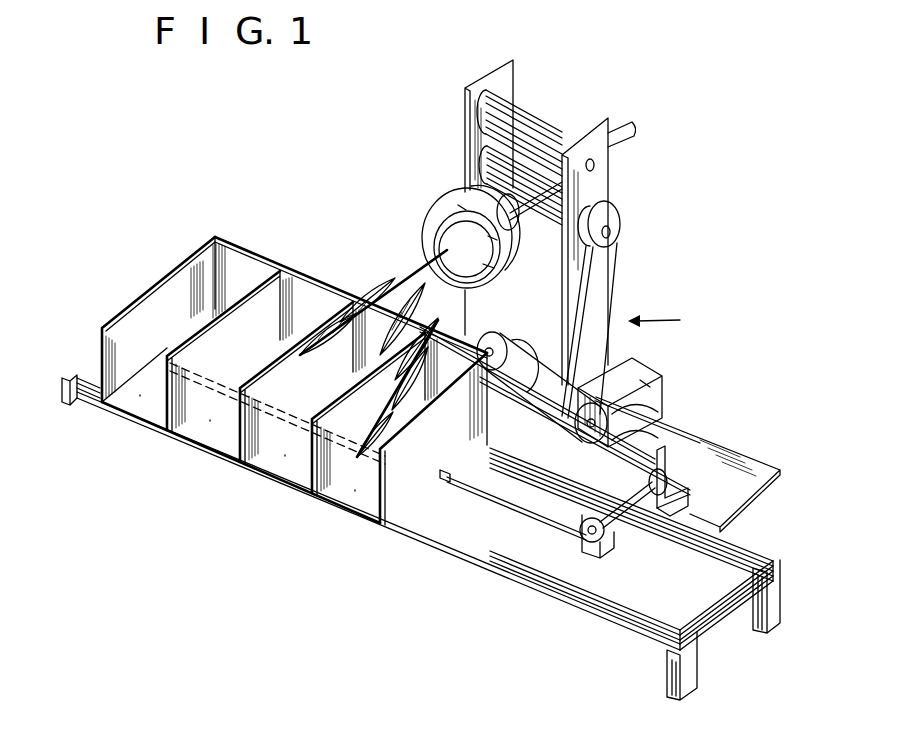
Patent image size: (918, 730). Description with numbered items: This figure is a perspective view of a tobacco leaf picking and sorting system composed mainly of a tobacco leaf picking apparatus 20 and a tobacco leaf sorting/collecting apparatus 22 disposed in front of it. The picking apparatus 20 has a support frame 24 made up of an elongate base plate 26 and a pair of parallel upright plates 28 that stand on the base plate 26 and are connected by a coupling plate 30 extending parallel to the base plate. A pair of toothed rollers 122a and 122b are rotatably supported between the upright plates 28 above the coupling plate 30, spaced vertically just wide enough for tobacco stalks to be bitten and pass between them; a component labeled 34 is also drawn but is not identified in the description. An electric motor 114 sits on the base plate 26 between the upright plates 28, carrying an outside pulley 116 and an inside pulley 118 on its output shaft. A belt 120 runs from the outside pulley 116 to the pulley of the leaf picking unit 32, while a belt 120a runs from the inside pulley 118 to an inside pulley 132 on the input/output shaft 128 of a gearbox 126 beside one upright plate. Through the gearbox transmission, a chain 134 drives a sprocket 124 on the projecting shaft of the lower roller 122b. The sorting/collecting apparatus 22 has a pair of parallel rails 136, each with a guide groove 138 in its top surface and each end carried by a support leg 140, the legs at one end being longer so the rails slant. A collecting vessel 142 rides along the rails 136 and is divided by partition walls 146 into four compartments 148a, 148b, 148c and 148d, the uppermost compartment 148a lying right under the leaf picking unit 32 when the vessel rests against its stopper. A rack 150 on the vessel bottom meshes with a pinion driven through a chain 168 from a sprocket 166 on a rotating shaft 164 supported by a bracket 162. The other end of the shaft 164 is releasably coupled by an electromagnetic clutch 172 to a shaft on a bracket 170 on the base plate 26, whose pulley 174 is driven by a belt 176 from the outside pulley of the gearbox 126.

The tobacco leaf picking apparatus 20 is at (426, 181).
The tobacco leaf sorting/collecting apparatus 22 is at (258, 518).
The support frame 24 is at (667, 318).
The base plate 26 is at (767, 467).
The upright plates 28 is at (492, 73).
The coupling plate 30 is at (555, 252).
The leaf picking unit 32 is at (428, 223).
The roller shaft 34 is at (562, 207).
The electric motor 114 is at (512, 418).
The outside pulley 116 is at (478, 400).
The inside pulley 118 is at (510, 340).
The belt 120 is at (478, 343).
The belt 120a is at (612, 358).
The toothed roller 122a is at (537, 110).
The toothed roller 122b is at (490, 157).
The sprocket 124 is at (622, 222).
The gearbox 126 is at (640, 369).
The input/output shaft 128 is at (587, 438).
The inside pulley 132 is at (650, 397).
The chain 134 is at (613, 290).
The rails 136 is at (585, 613).
The guide groove 138 is at (760, 558).
The support leg 140 is at (70, 398).
The collecting vessel 142 is at (170, 268).
The partition walls 146 is at (185, 430).
The compartment 148a is at (372, 510).
The compartment 148b is at (298, 475).
The compartment 148c is at (215, 440).
The compartment 148d is at (150, 405).
The rack 150 is at (442, 480).
The bracket 162 is at (607, 545).
The rotating shaft 164 is at (647, 502).
The sprocket 166 is at (580, 531).
The chain 168 is at (500, 500).
The bracket 170 is at (688, 484).
The electromagnetic clutch 172 is at (670, 527).
The pulley 174 is at (683, 457).
The belt 176 is at (665, 447).